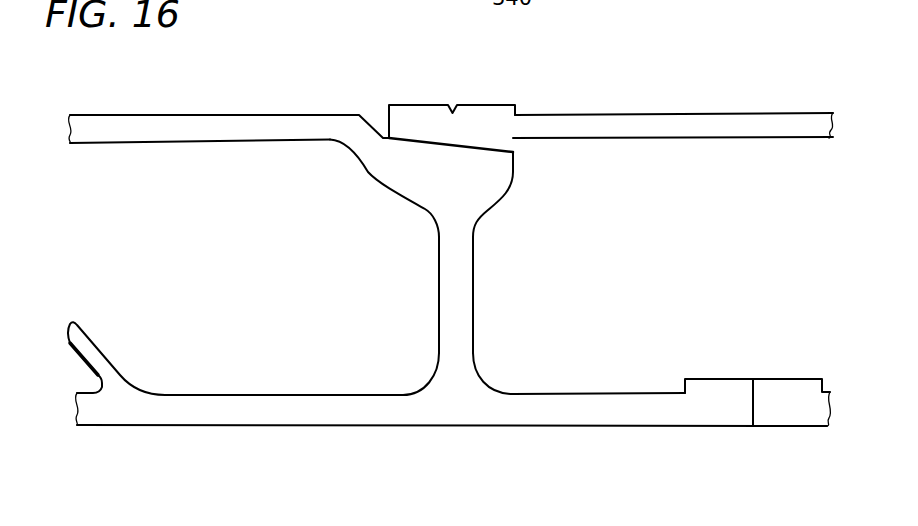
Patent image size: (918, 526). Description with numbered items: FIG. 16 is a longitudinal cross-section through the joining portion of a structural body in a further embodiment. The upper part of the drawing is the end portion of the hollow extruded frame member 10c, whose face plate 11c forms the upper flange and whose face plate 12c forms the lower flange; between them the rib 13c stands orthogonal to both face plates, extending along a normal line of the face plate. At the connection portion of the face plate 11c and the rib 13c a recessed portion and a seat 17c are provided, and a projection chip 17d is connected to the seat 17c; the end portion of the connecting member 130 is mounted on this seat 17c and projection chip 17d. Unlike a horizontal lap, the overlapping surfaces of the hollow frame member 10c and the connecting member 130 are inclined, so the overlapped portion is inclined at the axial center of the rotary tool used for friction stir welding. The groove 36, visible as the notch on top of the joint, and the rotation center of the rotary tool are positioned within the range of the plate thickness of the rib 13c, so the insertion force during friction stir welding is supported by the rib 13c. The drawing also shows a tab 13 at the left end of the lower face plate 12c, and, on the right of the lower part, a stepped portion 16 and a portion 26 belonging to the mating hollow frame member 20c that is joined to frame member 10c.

The hollow frame member 10c is at (450, 194).
The face plate 11c is at (130, 123).
The groove 36 is at (453, 108).
The connecting member 130 is at (633, 122).
The seat 17c is at (420, 163).
The projection chip 17d is at (495, 182).
The rib 13c is at (460, 310).
The tab 13 is at (103, 353).
The face plate 12c is at (215, 410).
The step portion 16 is at (715, 375).
The rib portion 26 is at (782, 378).
The second member 20c is at (449, 411).